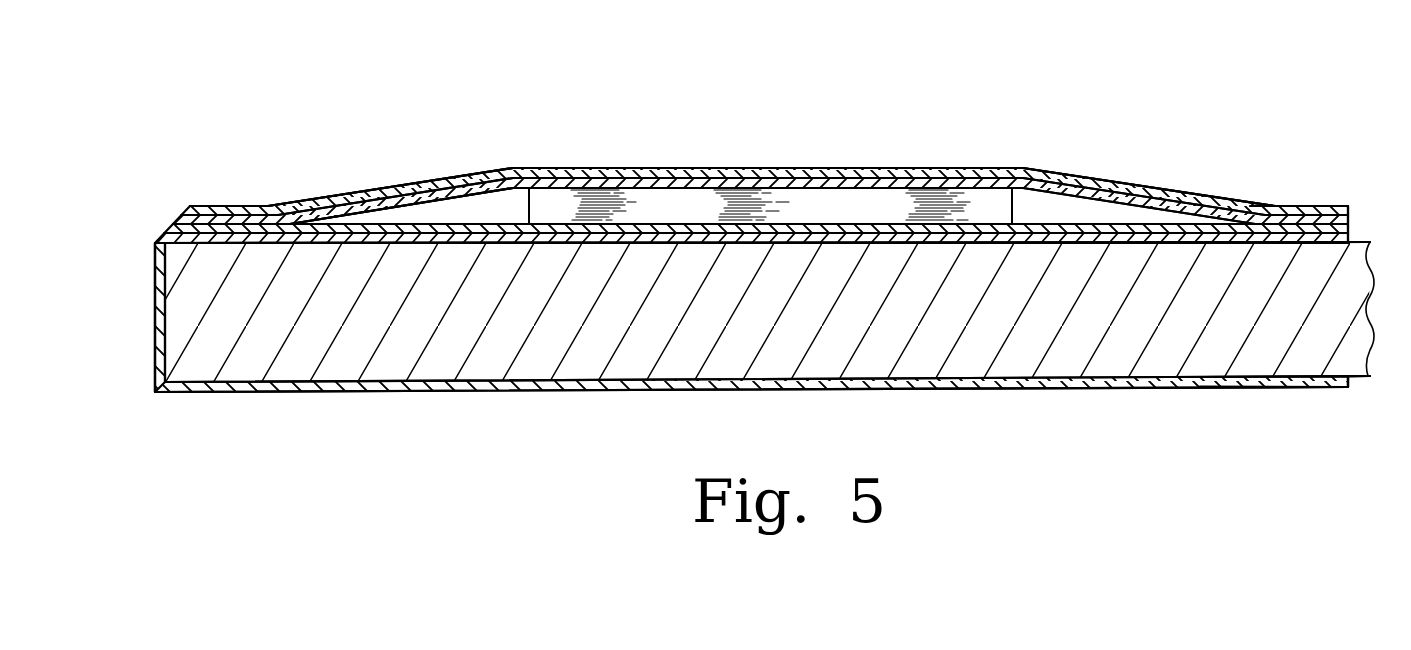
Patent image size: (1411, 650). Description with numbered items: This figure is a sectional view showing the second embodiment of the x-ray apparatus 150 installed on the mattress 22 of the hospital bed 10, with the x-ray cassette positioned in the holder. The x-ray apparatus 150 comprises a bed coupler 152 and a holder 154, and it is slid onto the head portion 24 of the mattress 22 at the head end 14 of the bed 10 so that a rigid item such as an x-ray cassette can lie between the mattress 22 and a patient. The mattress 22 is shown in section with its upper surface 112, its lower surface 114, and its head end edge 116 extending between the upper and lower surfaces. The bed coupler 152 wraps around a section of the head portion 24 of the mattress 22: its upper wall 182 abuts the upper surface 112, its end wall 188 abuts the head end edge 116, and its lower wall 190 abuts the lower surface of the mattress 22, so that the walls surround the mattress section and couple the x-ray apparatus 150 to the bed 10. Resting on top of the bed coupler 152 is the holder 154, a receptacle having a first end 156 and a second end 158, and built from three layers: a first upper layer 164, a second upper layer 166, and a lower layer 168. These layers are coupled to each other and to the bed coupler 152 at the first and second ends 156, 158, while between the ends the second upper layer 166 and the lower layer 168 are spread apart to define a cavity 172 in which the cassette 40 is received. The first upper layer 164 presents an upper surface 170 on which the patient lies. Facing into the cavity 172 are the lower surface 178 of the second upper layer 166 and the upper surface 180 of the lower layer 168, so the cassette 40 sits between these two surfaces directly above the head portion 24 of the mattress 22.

The hospital bed 10 is at (612, 462).
The head end 14 is at (178, 342).
The mattress 22 is at (1012, 340).
The head portion 24 is at (487, 372).
The sensing element 40 is at (685, 205).
The upper surface 112 is at (1367, 242).
The lower surface 114 is at (1363, 387).
The head end edge 116 is at (158, 257).
The x-ray apparatus 150 is at (1088, 115).
The bed coupler 152 is at (316, 502).
The holder 154 is at (350, 178).
The first end 156 is at (215, 222).
The second end 158 is at (1302, 203).
The first upper layer 164 is at (933, 175).
The second upper layer 166 is at (553, 183).
The lower layer 168 is at (1177, 227).
The upper surface 170 is at (630, 168).
The cavity 172 is at (1072, 208).
The lower surface 178 is at (486, 197).
The upper surface 180 is at (398, 218).
The upper wall 182 is at (1368, 252).
The end wall 188 is at (155, 293).
The lower wall 190 is at (1263, 380).